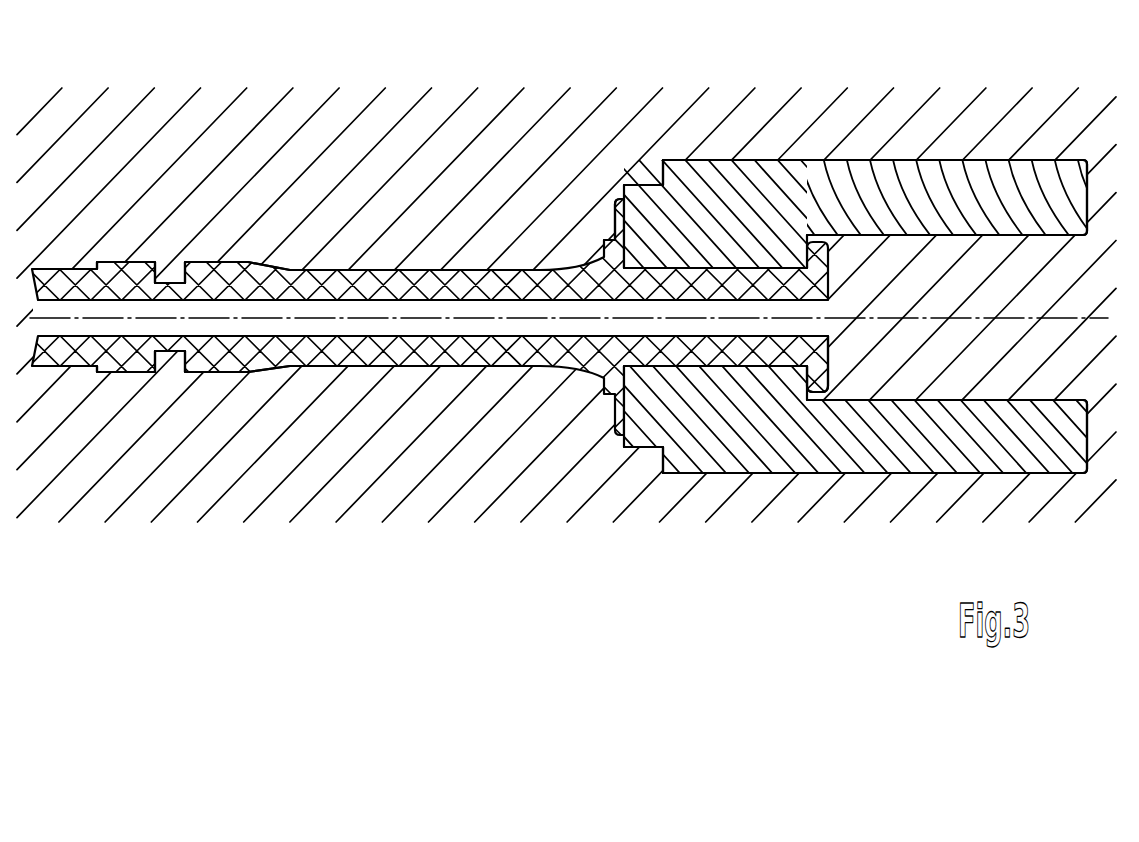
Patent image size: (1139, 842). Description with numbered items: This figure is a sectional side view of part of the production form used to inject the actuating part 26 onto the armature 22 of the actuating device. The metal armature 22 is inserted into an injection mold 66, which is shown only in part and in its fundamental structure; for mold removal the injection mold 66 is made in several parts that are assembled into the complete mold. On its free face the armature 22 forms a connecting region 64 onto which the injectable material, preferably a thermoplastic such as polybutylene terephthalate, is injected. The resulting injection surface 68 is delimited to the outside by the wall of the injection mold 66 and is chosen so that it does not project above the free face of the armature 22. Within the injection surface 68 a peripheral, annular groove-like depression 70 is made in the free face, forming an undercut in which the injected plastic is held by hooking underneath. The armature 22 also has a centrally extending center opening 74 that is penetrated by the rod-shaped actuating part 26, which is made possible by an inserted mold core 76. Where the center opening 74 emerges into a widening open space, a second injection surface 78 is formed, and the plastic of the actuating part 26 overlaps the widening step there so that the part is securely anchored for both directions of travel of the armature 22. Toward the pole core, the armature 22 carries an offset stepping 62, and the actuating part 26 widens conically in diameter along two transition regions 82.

The armature 22 is at (875, 442).
The actuating part 26 is at (475, 367).
The stepping 62 is at (628, 238).
The connecting region 64 is at (627, 204).
The injection mold 66 is at (412, 500).
The injection surface 68 is at (645, 448).
The annular groove-like depression 70 is at (708, 225).
The center opening 74 is at (790, 250).
The mold core 76 is at (352, 326).
The second injection surface 78 is at (818, 400).
The transition regions 82 is at (207, 377).